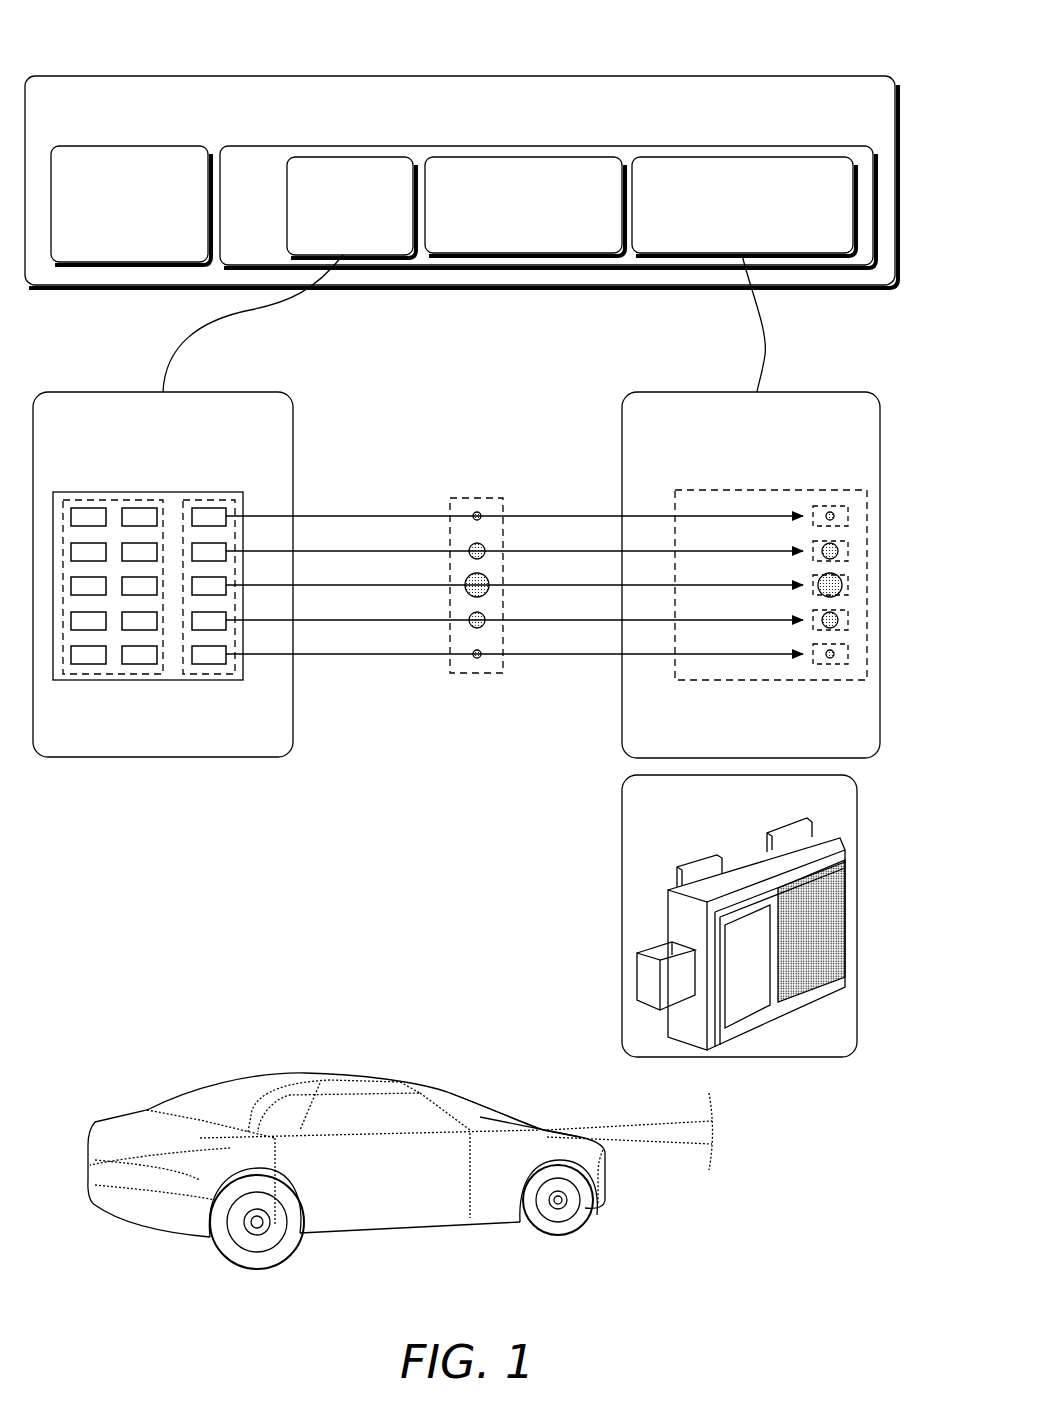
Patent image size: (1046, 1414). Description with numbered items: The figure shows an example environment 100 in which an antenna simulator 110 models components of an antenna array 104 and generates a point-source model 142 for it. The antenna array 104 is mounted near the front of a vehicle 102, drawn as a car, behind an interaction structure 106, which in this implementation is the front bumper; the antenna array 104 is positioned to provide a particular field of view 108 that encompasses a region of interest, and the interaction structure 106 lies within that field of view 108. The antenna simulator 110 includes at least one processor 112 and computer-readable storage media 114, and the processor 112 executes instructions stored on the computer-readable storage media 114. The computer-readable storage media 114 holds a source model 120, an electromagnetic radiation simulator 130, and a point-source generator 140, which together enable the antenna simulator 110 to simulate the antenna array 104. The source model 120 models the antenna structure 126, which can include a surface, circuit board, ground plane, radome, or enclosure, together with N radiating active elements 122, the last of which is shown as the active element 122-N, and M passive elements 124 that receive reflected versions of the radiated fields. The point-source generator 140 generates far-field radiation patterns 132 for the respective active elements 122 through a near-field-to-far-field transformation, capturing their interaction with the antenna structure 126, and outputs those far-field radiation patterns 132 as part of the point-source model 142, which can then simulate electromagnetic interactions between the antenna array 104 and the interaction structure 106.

The environment 100 is at (153, 55).
The antenna simulator 110 is at (461, 182).
The processor 112 is at (131, 205).
The computer-readable storage media 114 is at (548, 207).
The source model 120 is at (351, 207).
The electromagnetic radiation simulator 130 is at (525, 206).
The point-source generator 140 is at (744, 206).
The active elements 122 is at (207, 495).
The active element 122-N is at (209, 671).
The passive elements 124 is at (62, 494).
The antenna structure 126 is at (65, 686).
The far-field radiation patterns 132 is at (474, 494).
The point-source model 142 is at (672, 686).
The antenna array 104 is at (547, 1127).
The vehicle 102 is at (298, 1063).
The interaction structure 106 is at (608, 1180).
The field of view 108 is at (665, 1146).